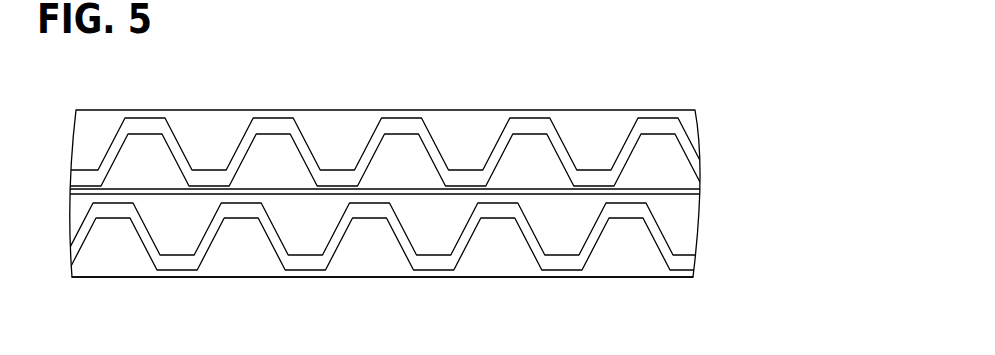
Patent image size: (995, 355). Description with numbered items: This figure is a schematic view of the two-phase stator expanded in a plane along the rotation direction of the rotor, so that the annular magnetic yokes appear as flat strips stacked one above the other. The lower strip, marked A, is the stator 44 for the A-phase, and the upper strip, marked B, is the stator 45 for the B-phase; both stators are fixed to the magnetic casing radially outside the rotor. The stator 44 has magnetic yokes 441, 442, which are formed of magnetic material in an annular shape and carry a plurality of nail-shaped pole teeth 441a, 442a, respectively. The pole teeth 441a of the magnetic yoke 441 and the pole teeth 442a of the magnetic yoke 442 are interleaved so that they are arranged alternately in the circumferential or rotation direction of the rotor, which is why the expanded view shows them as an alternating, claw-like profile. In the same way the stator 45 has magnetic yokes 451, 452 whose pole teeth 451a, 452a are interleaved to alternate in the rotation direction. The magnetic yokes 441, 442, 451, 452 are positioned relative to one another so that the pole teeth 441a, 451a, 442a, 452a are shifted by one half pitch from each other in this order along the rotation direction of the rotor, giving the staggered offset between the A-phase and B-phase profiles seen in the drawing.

The A-phase A is at (48, 250).
The B-phase B is at (48, 157).
The stator 44 is at (765, 203).
The magnetic yoke 441 is at (692, 272).
The pole teeth 441a is at (212, 265).
The magnetic yoke 442 is at (682, 210).
The pole teeth 442a is at (193, 223).
The stator 45 is at (765, 109).
The magnetic yoke 451 is at (677, 177).
The pole teeth 451a is at (152, 172).
The magnetic yoke 452 is at (688, 125).
The pole teeth 452a is at (203, 120).